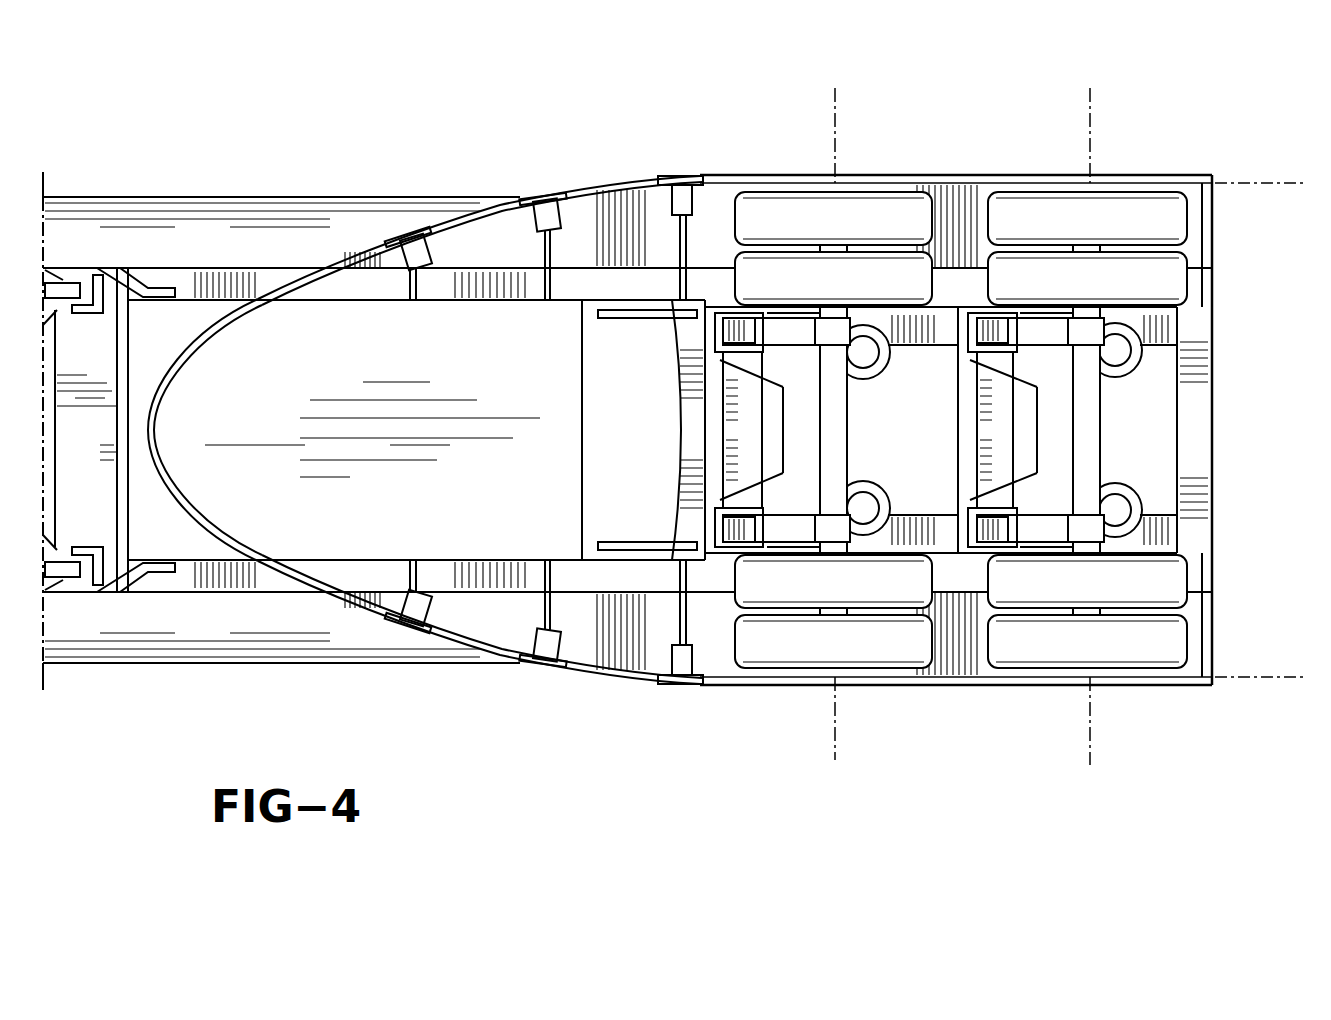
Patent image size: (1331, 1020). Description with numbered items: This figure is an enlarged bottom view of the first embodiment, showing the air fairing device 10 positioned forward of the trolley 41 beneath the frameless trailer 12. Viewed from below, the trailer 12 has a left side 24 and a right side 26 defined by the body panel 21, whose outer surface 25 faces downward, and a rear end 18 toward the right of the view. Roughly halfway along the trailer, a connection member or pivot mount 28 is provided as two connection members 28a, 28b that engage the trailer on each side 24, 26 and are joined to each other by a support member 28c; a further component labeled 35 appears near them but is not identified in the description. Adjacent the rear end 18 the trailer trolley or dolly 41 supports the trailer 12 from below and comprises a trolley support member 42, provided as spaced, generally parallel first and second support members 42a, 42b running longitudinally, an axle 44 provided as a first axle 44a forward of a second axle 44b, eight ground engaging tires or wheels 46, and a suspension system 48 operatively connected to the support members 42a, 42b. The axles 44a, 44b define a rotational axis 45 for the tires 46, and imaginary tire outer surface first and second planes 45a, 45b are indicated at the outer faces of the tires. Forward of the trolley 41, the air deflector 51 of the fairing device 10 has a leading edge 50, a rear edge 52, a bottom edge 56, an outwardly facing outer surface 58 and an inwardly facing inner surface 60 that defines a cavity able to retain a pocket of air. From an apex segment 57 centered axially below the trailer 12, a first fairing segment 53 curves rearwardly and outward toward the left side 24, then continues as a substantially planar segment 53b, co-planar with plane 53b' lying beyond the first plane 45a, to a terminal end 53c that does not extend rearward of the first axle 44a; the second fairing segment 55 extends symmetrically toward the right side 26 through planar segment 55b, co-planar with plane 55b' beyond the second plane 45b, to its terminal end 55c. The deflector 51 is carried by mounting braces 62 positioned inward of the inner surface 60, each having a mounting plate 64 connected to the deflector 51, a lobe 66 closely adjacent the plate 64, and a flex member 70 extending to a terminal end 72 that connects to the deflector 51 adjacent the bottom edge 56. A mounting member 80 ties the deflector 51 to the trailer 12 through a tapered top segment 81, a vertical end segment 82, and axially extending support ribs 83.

The air fairing device 10 is at (577, 177).
The frameless trailer 12 is at (432, 674).
The rear end 18 is at (1268, 440).
The body panel 21 is at (206, 222).
The left side 24 is at (259, 674).
The outer surface 25 is at (207, 660).
The right side 26 is at (268, 190).
The connection member 28 is at (100, 266).
The connection member 28a is at (133, 585).
The connection member 28b is at (133, 276).
The support member 28c is at (97, 370).
The hinge bracket 35 is at (85, 278).
The trailer trolley 41 is at (941, 430).
The trolley support member 42 is at (713, 465).
The trolley first support member 42a is at (1168, 520).
The trolley second support member 42b is at (1168, 333).
The axle 44 is at (852, 405).
The first axle 44a is at (833, 430).
The second axle 44b is at (1086, 430).
The rotational axis 45 is at (840, 92).
The imaginary tire outer surface first plane 45a is at (1254, 615).
The imaginary tire outer surface second plane 45b is at (1254, 245).
The tires 46 is at (880, 275).
The suspension system 48 is at (1168, 480).
The leading edge 50 is at (147, 432).
The air deflector 51 is at (585, 684).
The rear edge 52 is at (737, 175).
The first fairing segment 53 is at (332, 620).
The planar segment 53b is at (956, 715).
The co-planar plane 53b' is at (1260, 707).
The terminal end 53c is at (760, 690).
The second fairing segment 55 is at (340, 250).
The planar segment 55b is at (956, 145).
The co-planar plane 55b' is at (1260, 145).
The terminal end 55c is at (760, 184).
The bottom edge 56 is at (175, 492).
The apex segment 57 is at (87, 420).
The outer surface 58 is at (265, 597).
The inner surface 60 is at (262, 616).
The mounting brace 62 is at (535, 228).
The mounting plate 64 is at (675, 178).
The lobe 66 is at (645, 190).
The flex member 70 is at (692, 175).
The terminal end 72 is at (683, 430).
The mounting member 80 is at (940, 688).
The tapered top segment 81 is at (968, 200).
The vertical end segment 82 is at (1020, 190).
The support ribs 83 is at (410, 286).